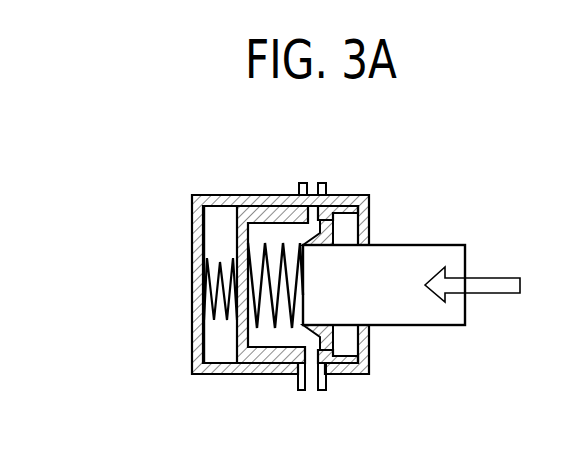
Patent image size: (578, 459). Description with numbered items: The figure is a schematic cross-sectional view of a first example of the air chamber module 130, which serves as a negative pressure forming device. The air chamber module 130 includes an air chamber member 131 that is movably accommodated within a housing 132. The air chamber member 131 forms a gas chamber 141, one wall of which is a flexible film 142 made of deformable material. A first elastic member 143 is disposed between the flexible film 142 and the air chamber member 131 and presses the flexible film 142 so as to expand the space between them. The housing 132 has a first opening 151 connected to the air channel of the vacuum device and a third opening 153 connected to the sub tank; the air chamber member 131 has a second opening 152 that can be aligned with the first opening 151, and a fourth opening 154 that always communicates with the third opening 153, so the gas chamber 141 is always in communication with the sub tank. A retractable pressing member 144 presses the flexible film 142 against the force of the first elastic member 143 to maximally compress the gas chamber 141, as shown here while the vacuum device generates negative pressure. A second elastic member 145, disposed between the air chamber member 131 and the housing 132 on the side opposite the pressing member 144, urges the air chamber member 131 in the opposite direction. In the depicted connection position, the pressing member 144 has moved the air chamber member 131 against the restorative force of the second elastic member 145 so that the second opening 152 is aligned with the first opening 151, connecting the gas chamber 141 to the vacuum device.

The air chamber module 130 is at (180, 170).
The air chamber member 131 is at (240, 233).
The housing 132 is at (204, 265).
The gas chamber 141 is at (262, 212).
The flexible film 142 is at (334, 228).
The first elastic member 143 is at (300, 299).
The pressing member 144 is at (413, 327).
The second elastic member 145 is at (207, 288).
The first opening 151 is at (322, 183).
The second opening 152 is at (300, 212).
The third opening 153 is at (314, 392).
The fourth opening 154 is at (299, 358).